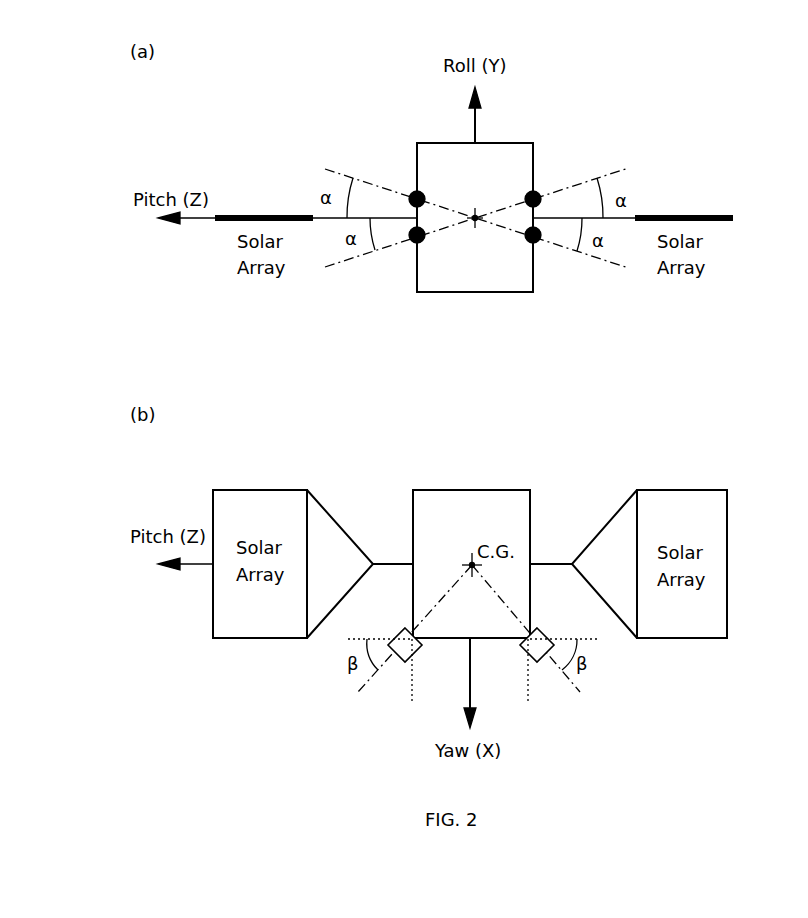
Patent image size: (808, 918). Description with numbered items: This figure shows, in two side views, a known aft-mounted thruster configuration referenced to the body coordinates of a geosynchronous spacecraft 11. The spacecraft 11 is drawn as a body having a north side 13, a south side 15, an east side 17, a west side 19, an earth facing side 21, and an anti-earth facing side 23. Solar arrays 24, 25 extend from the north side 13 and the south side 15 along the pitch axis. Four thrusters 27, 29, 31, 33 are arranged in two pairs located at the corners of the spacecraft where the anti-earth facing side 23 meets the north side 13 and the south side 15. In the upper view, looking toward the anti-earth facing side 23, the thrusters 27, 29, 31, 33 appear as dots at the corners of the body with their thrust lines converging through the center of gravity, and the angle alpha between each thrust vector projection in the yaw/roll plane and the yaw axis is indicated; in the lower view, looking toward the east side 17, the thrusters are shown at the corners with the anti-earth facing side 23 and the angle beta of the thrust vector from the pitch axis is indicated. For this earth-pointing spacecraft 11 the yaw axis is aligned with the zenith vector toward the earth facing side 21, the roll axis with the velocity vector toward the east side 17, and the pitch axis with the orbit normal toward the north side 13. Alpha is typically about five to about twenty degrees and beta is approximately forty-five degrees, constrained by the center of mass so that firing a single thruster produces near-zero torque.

The spacecraft 11 is at (604, 90).
The north side 13 is at (374, 390).
The south side 15 is at (568, 390).
The east side 17 is at (485, 374).
The west side 19 is at (475, 319).
The earth facing side 21 is at (471, 459).
The anti-earth facing side 23 is at (447, 280).
The solar array 24 is at (690, 214).
The solar array 25 is at (283, 214).
The thruster 27 is at (412, 195).
The thruster 29 is at (414, 243).
The thruster 31 is at (540, 195).
The thruster 33 is at (534, 243).